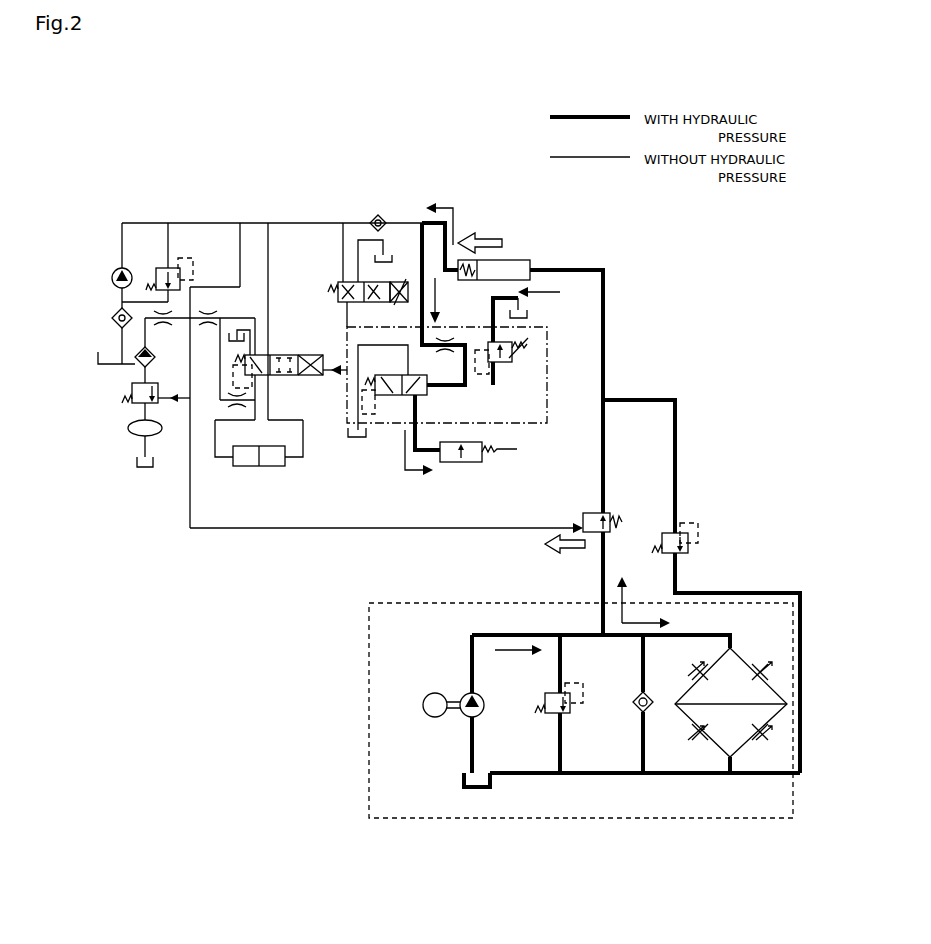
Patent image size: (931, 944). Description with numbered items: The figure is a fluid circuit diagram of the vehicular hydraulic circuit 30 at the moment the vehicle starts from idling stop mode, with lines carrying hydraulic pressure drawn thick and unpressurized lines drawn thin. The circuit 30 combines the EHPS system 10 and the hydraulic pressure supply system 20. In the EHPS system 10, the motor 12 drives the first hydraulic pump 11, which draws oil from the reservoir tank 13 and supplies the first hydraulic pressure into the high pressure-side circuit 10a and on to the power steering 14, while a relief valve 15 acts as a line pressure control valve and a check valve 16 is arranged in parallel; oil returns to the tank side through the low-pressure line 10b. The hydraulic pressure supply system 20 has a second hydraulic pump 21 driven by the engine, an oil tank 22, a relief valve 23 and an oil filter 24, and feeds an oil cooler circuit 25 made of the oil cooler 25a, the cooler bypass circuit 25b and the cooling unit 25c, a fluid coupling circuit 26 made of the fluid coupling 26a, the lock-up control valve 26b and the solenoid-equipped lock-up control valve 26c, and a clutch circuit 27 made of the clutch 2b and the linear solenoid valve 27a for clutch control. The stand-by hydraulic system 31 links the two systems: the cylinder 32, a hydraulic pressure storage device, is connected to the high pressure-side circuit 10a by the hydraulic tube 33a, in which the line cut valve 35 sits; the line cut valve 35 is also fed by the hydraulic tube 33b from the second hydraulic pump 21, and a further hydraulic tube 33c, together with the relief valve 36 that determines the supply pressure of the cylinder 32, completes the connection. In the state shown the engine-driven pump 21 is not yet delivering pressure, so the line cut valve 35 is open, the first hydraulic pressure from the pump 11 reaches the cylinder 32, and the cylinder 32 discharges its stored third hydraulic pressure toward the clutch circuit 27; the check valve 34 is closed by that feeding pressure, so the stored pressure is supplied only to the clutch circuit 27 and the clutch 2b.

The EHPS system 10 is at (412, 699).
The high pressure-side circuit 10a is at (595, 631).
The return line 10b is at (595, 806).
The first hydraulic pump 11 is at (478, 713).
The motor 12 is at (435, 693).
The reservoir tank 13 is at (465, 770).
The power steering 14 is at (745, 662).
The relief valve 15 is at (565, 714).
The check valve 16 is at (640, 698).
The hydraulic pressure supply system 20 is at (182, 506).
The second hydraulic pump 21 is at (112, 279).
The oil tank 22 is at (98, 362).
The relief valve 23 is at (165, 268).
The oil filter 24 is at (112, 320).
The oil cooler circuit 25 is at (139, 445).
The oil cooler 25a is at (130, 432).
The cooler bypass circuit 25b is at (130, 398).
The cooling unit 25c is at (132, 364).
The fluid coupling circuit 26 is at (318, 459).
The fluid coupling 26a is at (252, 468).
The lock-up control valve 26b is at (300, 353).
The lock-up control valve 26c is at (338, 282).
The clutch circuit 27 is at (497, 424).
The linear solenoid valve 27a is at (520, 385).
The clutch 2b is at (458, 464).
The vehicular hydraulic circuit 30 is at (191, 671).
The stand-by hydraulic system 31 is at (692, 491).
The cylinder 32 is at (512, 233).
The hydraulic tube 33a is at (610, 330).
The hydraulic tube 33b is at (290, 530).
The hydraulic tube 33c is at (750, 590).
The check valve 34 is at (378, 215).
The line cut valve 35 is at (590, 513).
The relief valve 36 is at (698, 530).